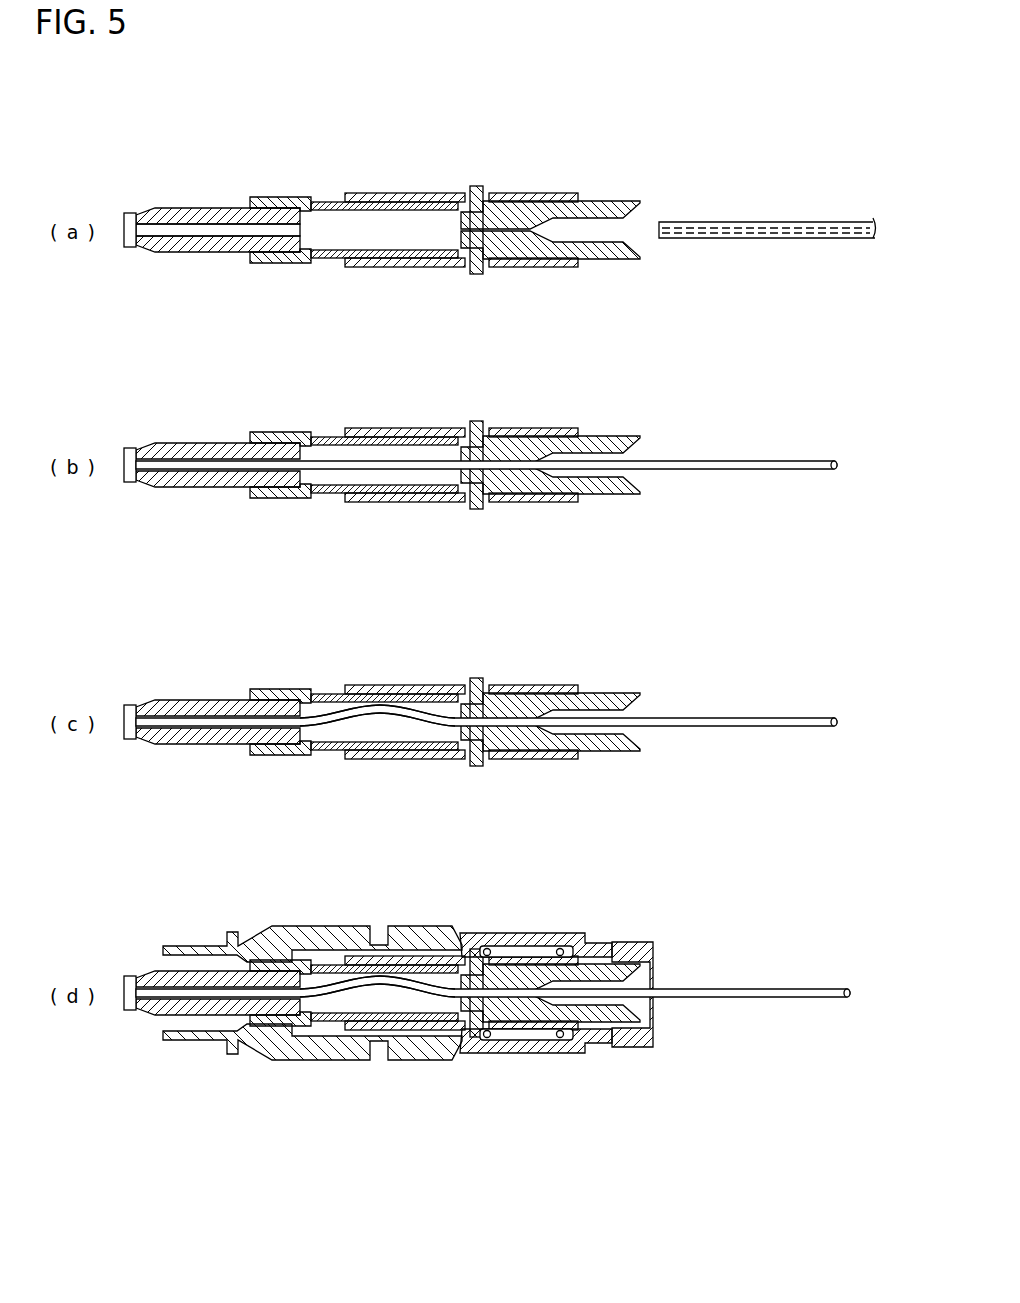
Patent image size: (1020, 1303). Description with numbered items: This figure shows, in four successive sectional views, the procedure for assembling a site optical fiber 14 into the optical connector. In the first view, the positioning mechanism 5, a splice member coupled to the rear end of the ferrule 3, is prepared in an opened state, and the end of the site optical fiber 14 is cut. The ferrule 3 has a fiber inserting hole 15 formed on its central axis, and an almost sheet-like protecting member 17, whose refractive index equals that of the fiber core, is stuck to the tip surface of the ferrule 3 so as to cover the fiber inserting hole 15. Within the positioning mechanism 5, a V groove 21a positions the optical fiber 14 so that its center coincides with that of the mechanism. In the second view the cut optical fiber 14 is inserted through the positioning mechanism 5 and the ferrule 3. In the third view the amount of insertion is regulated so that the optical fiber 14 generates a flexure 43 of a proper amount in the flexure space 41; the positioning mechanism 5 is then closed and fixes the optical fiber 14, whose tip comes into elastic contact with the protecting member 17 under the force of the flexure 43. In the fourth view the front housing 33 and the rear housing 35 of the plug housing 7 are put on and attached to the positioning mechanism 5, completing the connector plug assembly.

The ferrule 3 is at (190, 207).
The positioning mechanism 5 is at (477, 176).
The plug housing 7 is at (408, 939).
The site optical fiber 14 is at (750, 222).
The fiber inserting hole 15 is at (184, 237).
The protecting member 17 is at (127, 212).
The V groove 21a is at (531, 192).
The front housing 33 is at (425, 925).
The rear housing 35 is at (453, 868).
The flexure space 41 is at (410, 730).
The flexure 43 is at (331, 722).